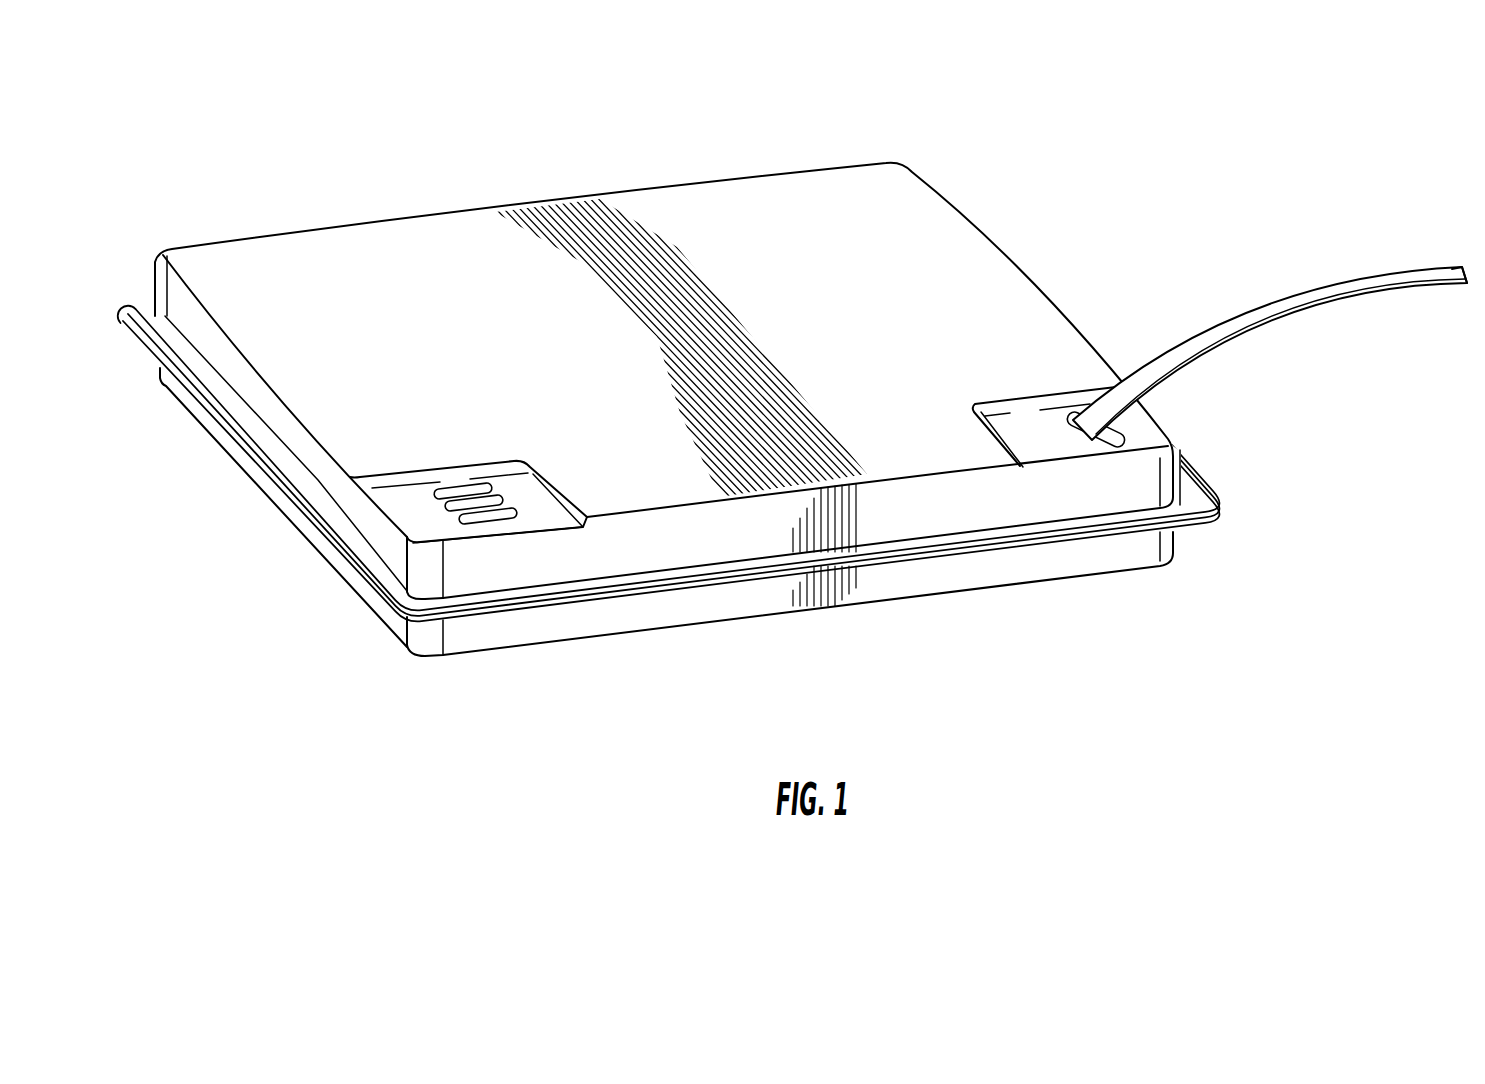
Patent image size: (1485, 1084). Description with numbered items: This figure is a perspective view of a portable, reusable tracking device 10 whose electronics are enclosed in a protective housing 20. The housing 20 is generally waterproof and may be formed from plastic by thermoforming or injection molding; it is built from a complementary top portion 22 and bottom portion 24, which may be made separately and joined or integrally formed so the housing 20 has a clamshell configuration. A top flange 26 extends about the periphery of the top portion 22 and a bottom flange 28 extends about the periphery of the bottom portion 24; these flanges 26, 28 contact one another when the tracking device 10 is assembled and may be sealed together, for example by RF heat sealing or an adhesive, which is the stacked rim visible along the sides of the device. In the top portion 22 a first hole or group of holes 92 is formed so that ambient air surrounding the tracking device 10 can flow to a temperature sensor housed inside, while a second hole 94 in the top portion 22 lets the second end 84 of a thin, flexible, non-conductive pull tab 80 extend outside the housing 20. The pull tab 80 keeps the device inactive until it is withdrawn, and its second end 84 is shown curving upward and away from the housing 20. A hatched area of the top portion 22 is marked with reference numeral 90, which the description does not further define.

The tracking device 10 is at (255, 133).
The protective housing 20 is at (1127, 227).
The top portion 22 is at (822, 520).
The bottom portion 24 is at (713, 613).
The top flange 26 is at (149, 320).
The bottom flange 28 is at (228, 442).
The pull tab 80 is at (1262, 326).
The second end of pull tab 84 is at (1453, 270).
The window / stripe region 90 is at (732, 245).
The first hole 92 is at (457, 507).
The second hole 94 is at (1113, 440).